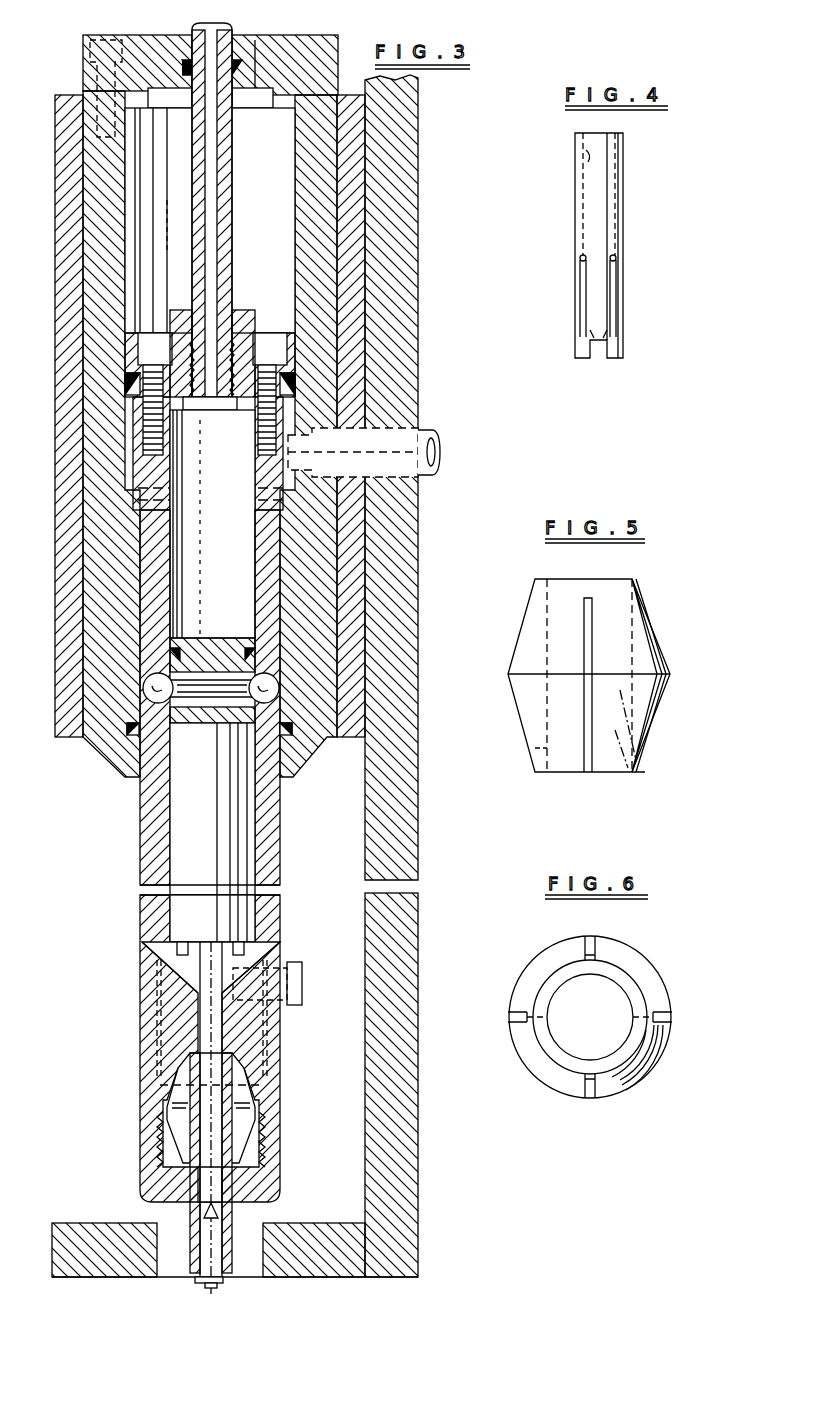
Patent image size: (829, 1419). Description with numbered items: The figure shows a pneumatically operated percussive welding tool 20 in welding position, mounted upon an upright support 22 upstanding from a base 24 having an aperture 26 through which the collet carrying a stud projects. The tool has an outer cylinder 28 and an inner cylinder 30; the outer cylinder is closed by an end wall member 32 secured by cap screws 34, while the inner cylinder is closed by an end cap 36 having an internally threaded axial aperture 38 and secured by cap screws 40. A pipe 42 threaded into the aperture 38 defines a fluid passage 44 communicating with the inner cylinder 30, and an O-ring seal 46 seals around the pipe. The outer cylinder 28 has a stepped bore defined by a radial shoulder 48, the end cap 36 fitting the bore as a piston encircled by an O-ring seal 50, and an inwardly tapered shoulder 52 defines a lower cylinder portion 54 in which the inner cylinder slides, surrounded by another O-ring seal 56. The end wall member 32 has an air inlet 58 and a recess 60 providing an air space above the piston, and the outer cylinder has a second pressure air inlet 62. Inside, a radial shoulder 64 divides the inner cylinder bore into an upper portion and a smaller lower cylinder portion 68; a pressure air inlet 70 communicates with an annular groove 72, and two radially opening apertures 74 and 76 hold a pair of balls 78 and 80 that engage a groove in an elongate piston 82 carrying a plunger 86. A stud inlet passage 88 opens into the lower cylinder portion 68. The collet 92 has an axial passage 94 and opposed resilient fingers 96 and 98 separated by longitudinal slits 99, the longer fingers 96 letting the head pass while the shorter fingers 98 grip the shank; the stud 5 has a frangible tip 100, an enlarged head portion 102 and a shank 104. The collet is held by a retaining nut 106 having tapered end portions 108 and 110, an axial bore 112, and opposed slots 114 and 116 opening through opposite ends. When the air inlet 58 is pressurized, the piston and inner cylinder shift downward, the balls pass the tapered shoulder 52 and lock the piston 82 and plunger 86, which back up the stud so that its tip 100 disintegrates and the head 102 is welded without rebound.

In FIG. 3, the stud 5 is at (195, 1264).
In FIG. 3, the percussive welding tool 20 is at (121, 894).
In FIG. 3, the upright support 22 is at (410, 1011).
In FIG. 3, the base 24 is at (350, 1264).
In FIG. 3, the aperture 26 is at (258, 1277).
In FIG. 3, the outer cylinder 28 is at (92, 614).
In FIG. 3, the inner cylinder 30 is at (152, 844).
In FIG. 3, the end wall member 32 is at (300, 52).
In FIG. 3, the cap screws 34 is at (130, 32).
In FIG. 3, the end cap 36 is at (238, 330).
In FIG. 3, the internally threaded axial aperture 38 is at (205, 330).
In FIG. 3, the cap screws 40 is at (140, 350).
In FIG. 3, the pipe 42 is at (232, 239).
In FIG. 3, the fluid passage 44 is at (210, 189).
In FIG. 3, the O-ring seal 46 is at (170, 97).
In FIG. 3, the radial shoulder 48 is at (300, 399).
In FIG. 3, the O-ring seal 50 is at (298, 379).
In FIG. 3, the inwardly tapered shoulder 52 is at (295, 486).
In FIG. 3, the lower cylinder portion 54 is at (272, 579).
In FIG. 3, the O-ring seal 56 is at (135, 745).
In FIG. 3, the air inlet 58 is at (258, 60).
In FIG. 3, the recess 60 is at (250, 100).
In FIG. 3, the second pressure air inlet 62 is at (440, 450).
In FIG. 3, the radial shoulder 64 is at (265, 946).
In FIG. 3, the lower cylinder portion 68 is at (238, 1024).
In FIG. 3, the pressure air inlet 70 is at (303, 982).
In FIG. 3, the annular groove 72 is at (186, 944).
In FIG. 3, the radially opening aperture 74 is at (160, 679).
In FIG. 3, the radially opening aperture 76 is at (288, 705).
In FIG. 3, the ball 78 is at (162, 692).
In FIG. 3, the ball 80 is at (268, 689).
In FIG. 3, the elongate piston 82 is at (215, 843).
In FIG. 3, the plunger 86 is at (248, 1204).
In FIG. 3, the stud inlet passage 88 is at (165, 983).
In FIG. 3, the collet 92 is at (200, 1224).
In FIG. 4, the collet 92 is at (634, 240).
In FIG. 4, the axial passage 94 is at (575, 168).
In FIG. 4, the resilient fingers 96 is at (620, 354).
In FIG. 4, the resilient fingers 98 is at (600, 342).
In FIG. 4, the longitudinal slits 99 is at (585, 290).
In FIG. 3, the frangible tip 100 is at (218, 1289).
In FIG. 3, the enlarged head portion 102 is at (205, 1280).
In FIG. 3, the shank 104 is at (195, 1224).
In FIG. 3, the retaining nut 106 is at (211, 1110).
In FIG. 5, the retaining nut 106 is at (677, 640).
In FIG. 6, the retaining nut 106 is at (675, 967).
In FIG. 5, the tapered end portion 108 is at (658, 612).
In FIG. 5, the tapered end portion 110 is at (658, 730).
In FIG. 5, the axial bore 112 is at (628, 588).
In FIG. 6, the axial bore 112 is at (620, 1038).
In FIG. 5, the longitudinal slots 114 is at (588, 773).
In FIG. 6, the longitudinal slots 114 is at (590, 938).
In FIG. 5, the longitudinal slots 116 is at (535, 586).
In FIG. 6, the longitudinal slots 116 is at (673, 1017).